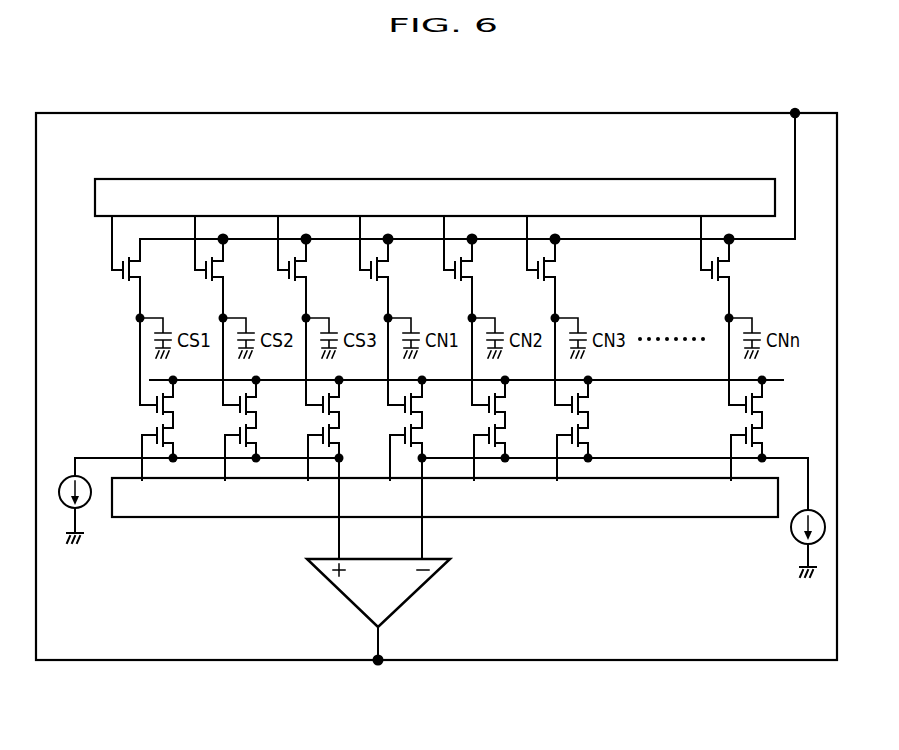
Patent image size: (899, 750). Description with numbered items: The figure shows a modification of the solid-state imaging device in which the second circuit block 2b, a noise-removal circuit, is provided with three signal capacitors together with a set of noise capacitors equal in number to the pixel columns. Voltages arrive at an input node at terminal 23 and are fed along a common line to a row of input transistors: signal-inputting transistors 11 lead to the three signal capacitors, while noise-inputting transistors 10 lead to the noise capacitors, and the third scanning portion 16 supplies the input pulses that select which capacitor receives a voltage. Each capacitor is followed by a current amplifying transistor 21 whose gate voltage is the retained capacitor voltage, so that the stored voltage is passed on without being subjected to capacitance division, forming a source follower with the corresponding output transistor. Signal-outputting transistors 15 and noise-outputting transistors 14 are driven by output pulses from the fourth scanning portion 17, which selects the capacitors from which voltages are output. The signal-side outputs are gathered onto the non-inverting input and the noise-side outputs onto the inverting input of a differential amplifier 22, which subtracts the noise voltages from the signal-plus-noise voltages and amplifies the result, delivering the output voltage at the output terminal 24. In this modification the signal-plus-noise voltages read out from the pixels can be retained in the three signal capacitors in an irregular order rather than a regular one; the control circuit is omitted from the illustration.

The second circuit block 2b is at (495, 113).
The input transistor 10 is at (391, 275).
The input transistor 11 is at (143, 275).
The output transistor 14 is at (424, 436).
The output transistor 15 is at (176, 436).
The third scanning portion 16 is at (592, 178).
The fourth scanning portion 17 is at (621, 519).
The current amplifying transistor 21 is at (176, 404).
The differential amplifier 22 is at (418, 596).
The input terminal 23 is at (794, 110).
The output terminal 24 is at (378, 666).